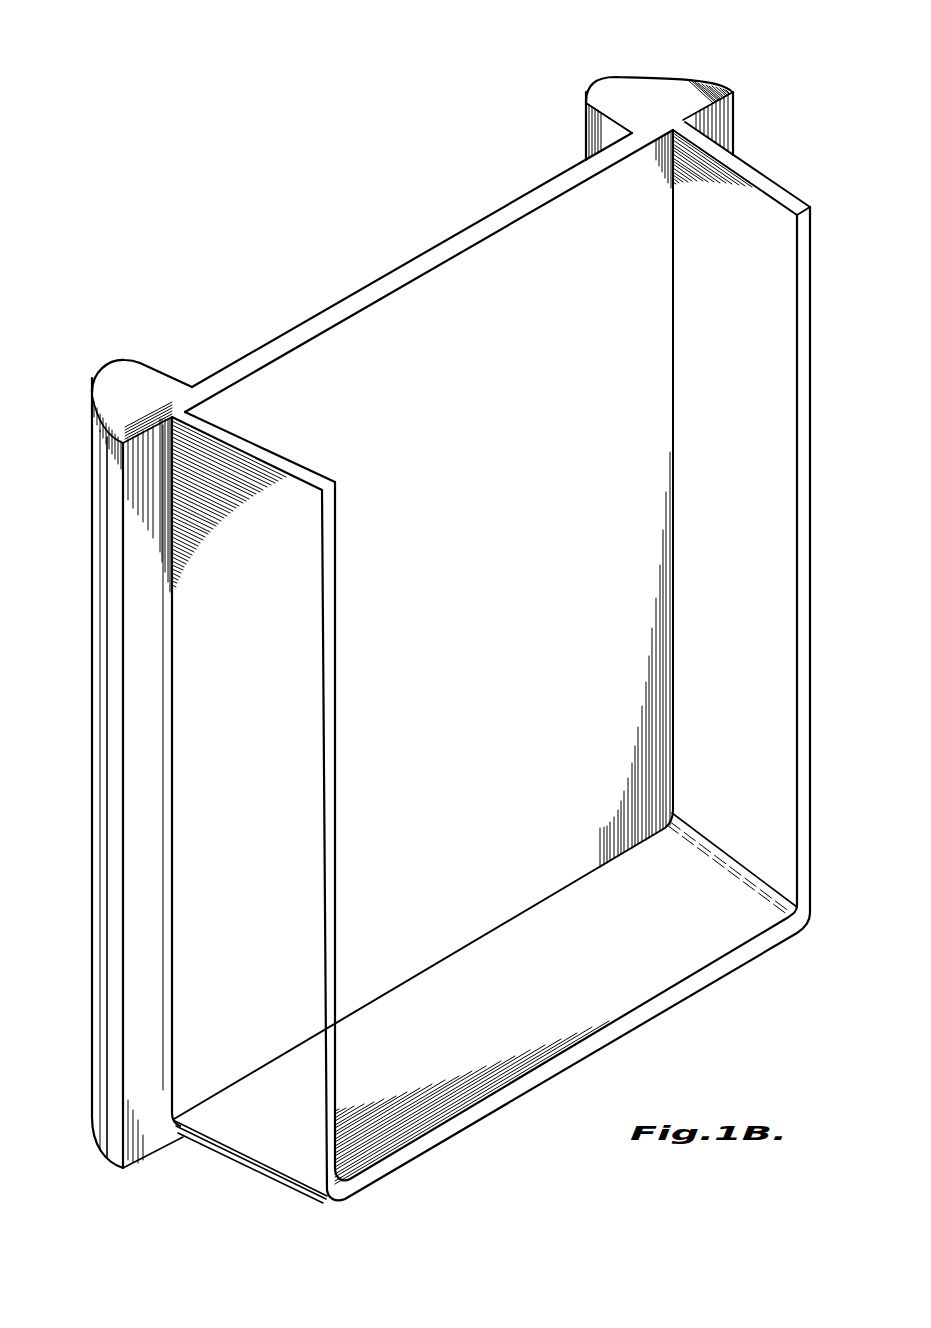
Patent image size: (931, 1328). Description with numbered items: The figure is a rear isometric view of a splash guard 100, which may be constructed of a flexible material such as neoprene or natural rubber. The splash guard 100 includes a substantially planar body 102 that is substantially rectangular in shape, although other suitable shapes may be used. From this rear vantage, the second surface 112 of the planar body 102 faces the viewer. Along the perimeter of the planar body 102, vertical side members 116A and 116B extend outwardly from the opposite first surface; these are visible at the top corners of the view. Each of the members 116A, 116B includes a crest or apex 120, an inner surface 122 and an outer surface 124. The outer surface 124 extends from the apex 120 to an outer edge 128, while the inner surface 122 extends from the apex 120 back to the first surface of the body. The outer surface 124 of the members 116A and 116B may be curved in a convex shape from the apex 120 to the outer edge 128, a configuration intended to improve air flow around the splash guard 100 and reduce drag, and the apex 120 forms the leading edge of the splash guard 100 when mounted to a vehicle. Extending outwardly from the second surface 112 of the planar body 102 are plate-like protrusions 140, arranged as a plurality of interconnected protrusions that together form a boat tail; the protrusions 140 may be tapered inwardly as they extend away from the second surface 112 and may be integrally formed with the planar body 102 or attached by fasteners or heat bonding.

The splash guard 100 is at (291, 195).
The planar body 102 is at (408, 270).
The second surface 112 is at (500, 612).
The member 116A is at (650, 107).
The member 116B is at (128, 390).
The apex 120 is at (587, 93).
The inner surface 122 is at (612, 123).
The outer surface 124 is at (680, 80).
The outer edge 128 is at (105, 568).
The protrusion 140 is at (777, 793).